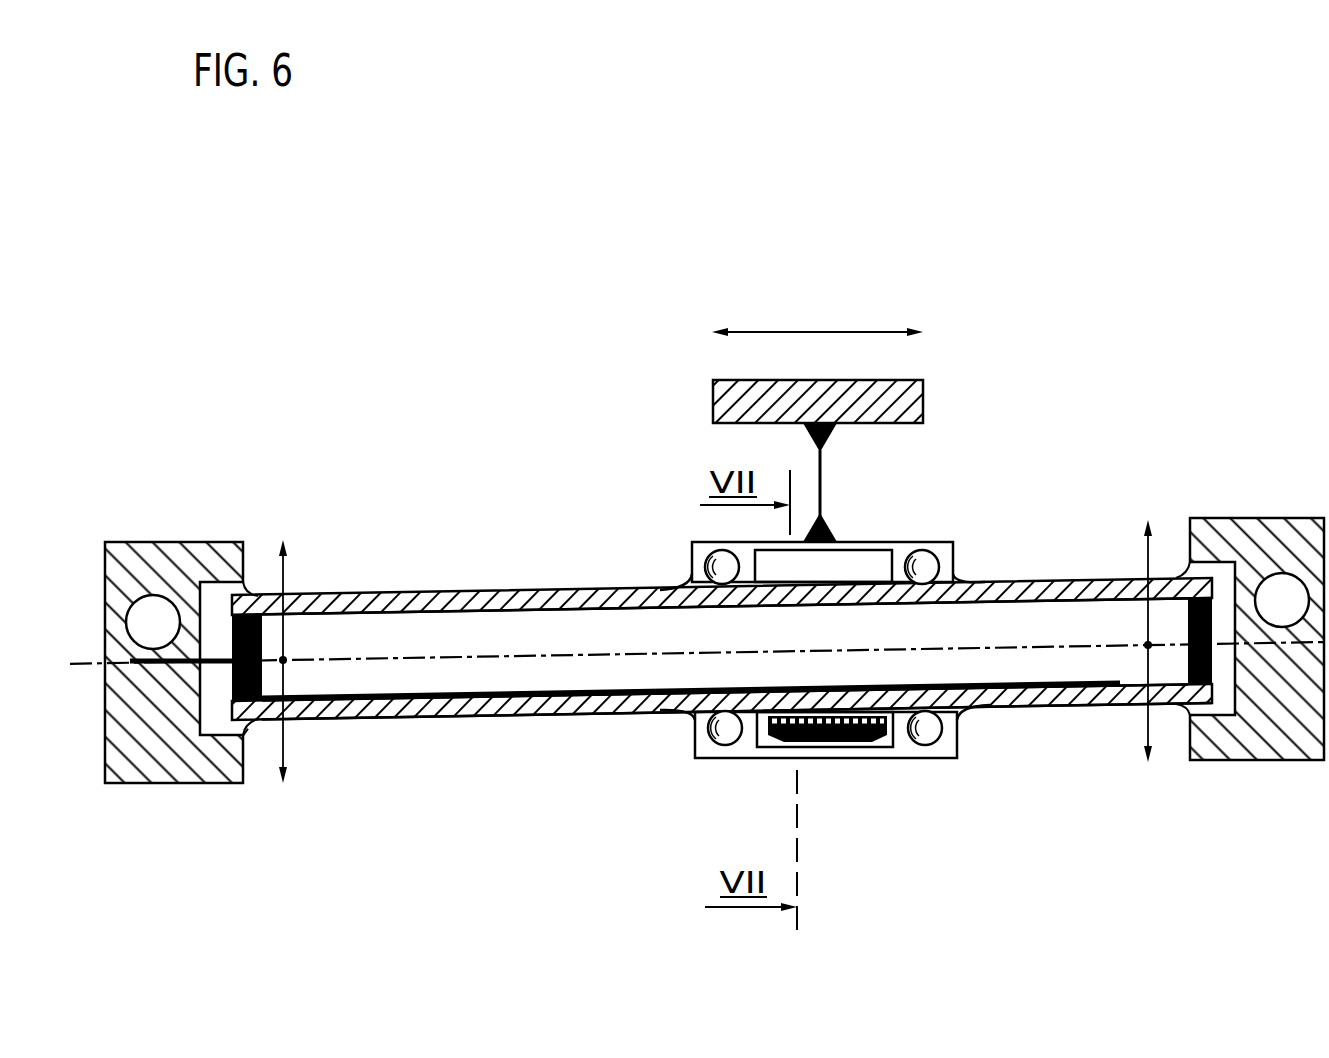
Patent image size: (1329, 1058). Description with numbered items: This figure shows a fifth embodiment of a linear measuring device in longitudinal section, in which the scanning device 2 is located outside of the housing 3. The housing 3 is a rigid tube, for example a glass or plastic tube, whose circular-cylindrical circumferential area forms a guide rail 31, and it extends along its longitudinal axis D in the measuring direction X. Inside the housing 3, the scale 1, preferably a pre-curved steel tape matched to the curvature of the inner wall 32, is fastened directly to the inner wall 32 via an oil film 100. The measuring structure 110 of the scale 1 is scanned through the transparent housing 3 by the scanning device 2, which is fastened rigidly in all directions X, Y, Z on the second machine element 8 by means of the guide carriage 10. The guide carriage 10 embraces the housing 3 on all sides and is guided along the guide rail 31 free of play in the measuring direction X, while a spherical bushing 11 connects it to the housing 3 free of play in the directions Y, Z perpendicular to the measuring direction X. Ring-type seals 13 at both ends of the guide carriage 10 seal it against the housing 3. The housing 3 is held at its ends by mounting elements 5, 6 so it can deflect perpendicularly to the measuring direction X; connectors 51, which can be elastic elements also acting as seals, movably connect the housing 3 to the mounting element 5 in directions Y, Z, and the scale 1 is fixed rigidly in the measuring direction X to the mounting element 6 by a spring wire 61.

The scale 1 is at (327, 727).
The scanning device 2 is at (837, 733).
The housing 3 is at (704, 664).
The mounting element 5 is at (1260, 545).
The mounting element 6 is at (188, 572).
The second machine element 8 is at (912, 382).
The guide carriage 10 is at (750, 750).
The spherical bushing 11 is at (925, 548).
The ring-type seals 13 is at (690, 722).
The guide rail 31 is at (432, 592).
The inner wall 32 is at (542, 710).
The connectors 51 is at (250, 727).
The spring wire 61 is at (215, 667).
The oil film 100 is at (373, 712).
The measuring structure 110 is at (432, 720).
The longitudinal axis D is at (366, 618).
The measuring direction X is at (817, 307).
The direction perpendicular to measuring direction Y is at (715, 631).
The direction perpendicular to measuring direction Z is at (714, 628).